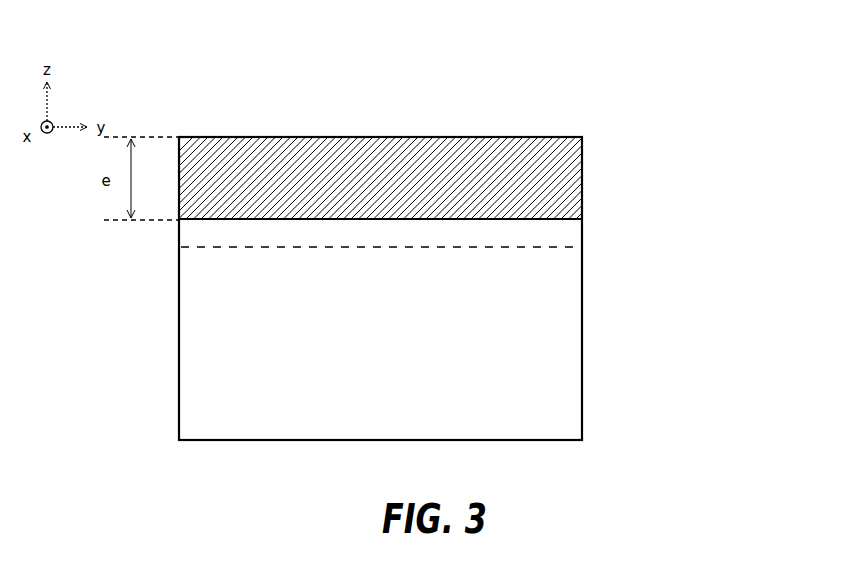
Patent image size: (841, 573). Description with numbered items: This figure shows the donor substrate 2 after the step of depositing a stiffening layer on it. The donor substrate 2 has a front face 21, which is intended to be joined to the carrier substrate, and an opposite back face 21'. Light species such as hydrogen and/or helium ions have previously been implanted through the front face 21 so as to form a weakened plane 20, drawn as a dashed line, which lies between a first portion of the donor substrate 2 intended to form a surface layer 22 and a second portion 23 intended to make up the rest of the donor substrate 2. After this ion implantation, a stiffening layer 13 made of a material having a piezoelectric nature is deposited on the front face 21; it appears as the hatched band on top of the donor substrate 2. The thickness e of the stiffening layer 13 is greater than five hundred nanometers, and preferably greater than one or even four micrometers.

The donor substrate 2 is at (556, 371).
The stiffening layer 13 is at (558, 162).
The weakened plane 20 is at (542, 246).
The front face 21 is at (380, 126).
The back face 21' is at (318, 453).
The surface layer 22 is at (195, 237).
The second portion 23 is at (195, 309).